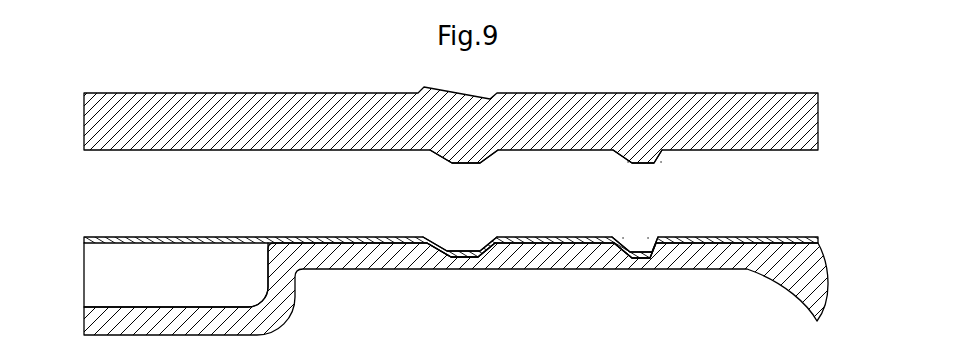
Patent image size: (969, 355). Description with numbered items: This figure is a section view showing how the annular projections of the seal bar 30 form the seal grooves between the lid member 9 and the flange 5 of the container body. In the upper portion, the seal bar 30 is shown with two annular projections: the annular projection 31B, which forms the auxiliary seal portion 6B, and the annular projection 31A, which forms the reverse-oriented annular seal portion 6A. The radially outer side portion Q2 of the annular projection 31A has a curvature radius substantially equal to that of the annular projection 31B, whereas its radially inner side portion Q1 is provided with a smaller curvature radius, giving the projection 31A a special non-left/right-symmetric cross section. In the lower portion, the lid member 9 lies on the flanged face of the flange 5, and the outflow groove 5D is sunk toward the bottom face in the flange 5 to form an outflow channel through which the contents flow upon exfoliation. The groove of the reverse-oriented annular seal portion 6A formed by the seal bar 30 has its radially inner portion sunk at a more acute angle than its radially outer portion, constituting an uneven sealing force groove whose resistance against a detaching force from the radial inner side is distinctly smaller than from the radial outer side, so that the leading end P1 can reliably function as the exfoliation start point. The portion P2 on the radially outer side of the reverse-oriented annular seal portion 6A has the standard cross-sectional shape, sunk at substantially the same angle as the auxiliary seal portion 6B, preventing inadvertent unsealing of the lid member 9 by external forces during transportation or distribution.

The seal bar 30 is at (608, 93).
The annular projection 31A is at (648, 165).
The annular projection 31B is at (460, 163).
The radially inner side portion Q1 is at (663, 162).
The radially outer side portion Q2 is at (627, 162).
The lid member 9 is at (229, 239).
The flange 5 is at (348, 262).
The outflow groove 5D is at (176, 306).
The reverse-oriented annular seal portion 6A is at (638, 279).
The auxiliary seal portion 6B is at (458, 278).
The leading end P1 is at (646, 228).
The radially outer side portion P2 is at (624, 228).